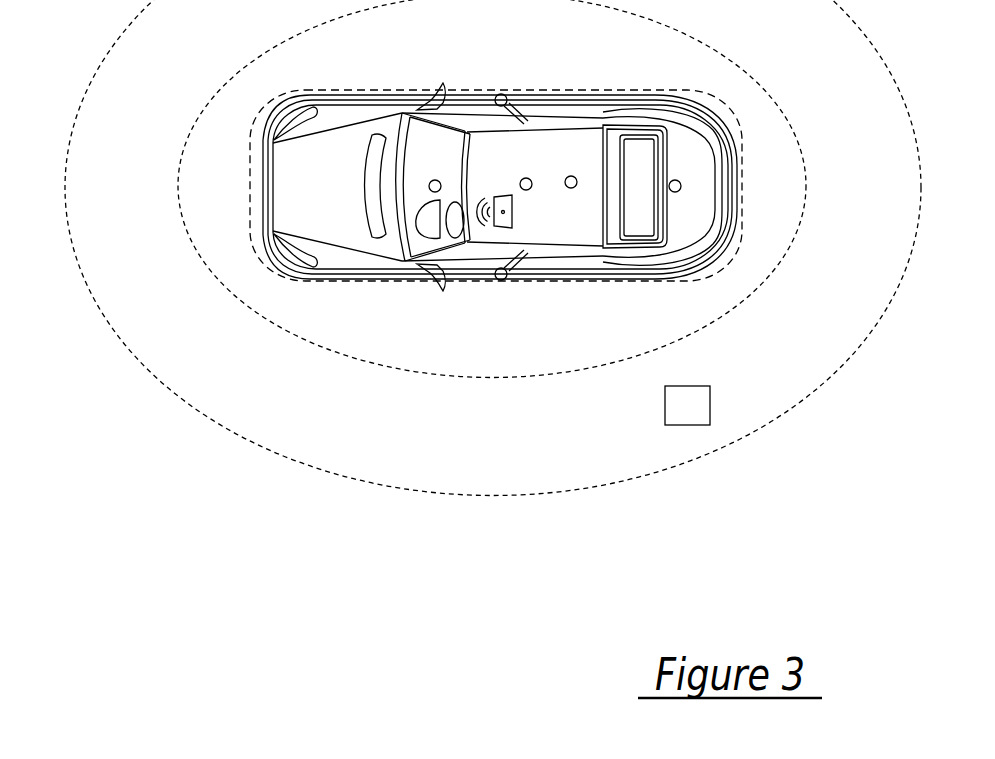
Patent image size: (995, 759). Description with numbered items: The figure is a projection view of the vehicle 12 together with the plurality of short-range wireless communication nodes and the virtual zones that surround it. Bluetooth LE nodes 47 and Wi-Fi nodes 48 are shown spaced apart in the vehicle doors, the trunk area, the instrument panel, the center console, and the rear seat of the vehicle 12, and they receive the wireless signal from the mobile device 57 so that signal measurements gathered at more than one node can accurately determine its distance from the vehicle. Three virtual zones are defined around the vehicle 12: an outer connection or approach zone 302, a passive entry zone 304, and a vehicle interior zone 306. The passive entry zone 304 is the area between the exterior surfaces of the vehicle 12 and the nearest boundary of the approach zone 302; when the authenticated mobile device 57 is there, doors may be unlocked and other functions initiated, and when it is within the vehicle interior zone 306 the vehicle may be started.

The vehicle 12 is at (738, 197).
The Bluetooth LE nodes 47 is at (501, 94).
The Wi-Fi nodes 48 is at (447, 171).
The wireless mobile device 57 is at (677, 420).
The connection or approach zone 302 is at (496, 460).
The passive entry zone 304 is at (487, 349).
The vehicle interior zone 306 is at (347, 84).